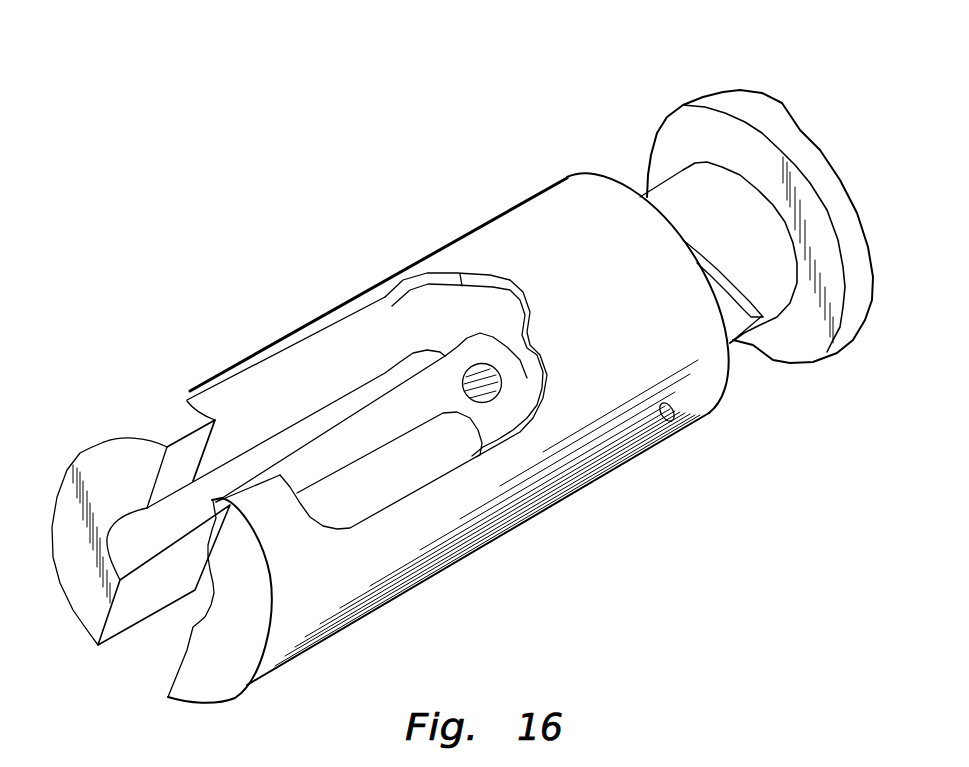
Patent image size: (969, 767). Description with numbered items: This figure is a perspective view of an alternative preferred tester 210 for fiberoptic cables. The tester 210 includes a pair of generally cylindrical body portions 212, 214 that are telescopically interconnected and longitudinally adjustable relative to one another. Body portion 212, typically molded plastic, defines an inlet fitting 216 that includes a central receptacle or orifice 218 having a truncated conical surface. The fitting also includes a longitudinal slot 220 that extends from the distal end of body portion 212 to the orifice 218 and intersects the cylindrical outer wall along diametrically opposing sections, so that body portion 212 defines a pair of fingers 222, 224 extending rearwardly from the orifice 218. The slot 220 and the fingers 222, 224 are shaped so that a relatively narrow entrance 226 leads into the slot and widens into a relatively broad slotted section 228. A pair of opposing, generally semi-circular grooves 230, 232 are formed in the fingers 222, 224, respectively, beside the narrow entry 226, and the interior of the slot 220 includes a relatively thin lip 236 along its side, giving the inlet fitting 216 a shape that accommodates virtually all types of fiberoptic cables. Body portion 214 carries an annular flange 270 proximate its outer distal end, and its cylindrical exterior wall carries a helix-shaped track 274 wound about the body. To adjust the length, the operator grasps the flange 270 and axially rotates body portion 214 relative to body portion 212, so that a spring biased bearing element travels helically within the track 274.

The tester 210 is at (368, 222).
The body portion 212 is at (550, 190).
The body portion 214 is at (752, 333).
The inlet fitting 216 is at (278, 397).
The orifice 218 is at (488, 363).
The longitudinal slot 220 is at (347, 360).
The finger 222 is at (59, 470).
The finger 224 is at (247, 684).
The narrow entrance 226 is at (133, 654).
The broad slotted section 228 is at (400, 475).
The semi-circular groove 230 is at (132, 538).
The semi-circular groove 232 is at (198, 628).
The lip 236 is at (407, 373).
The annular flange 270 is at (763, 120).
The helix-shaped track 274 is at (683, 170).